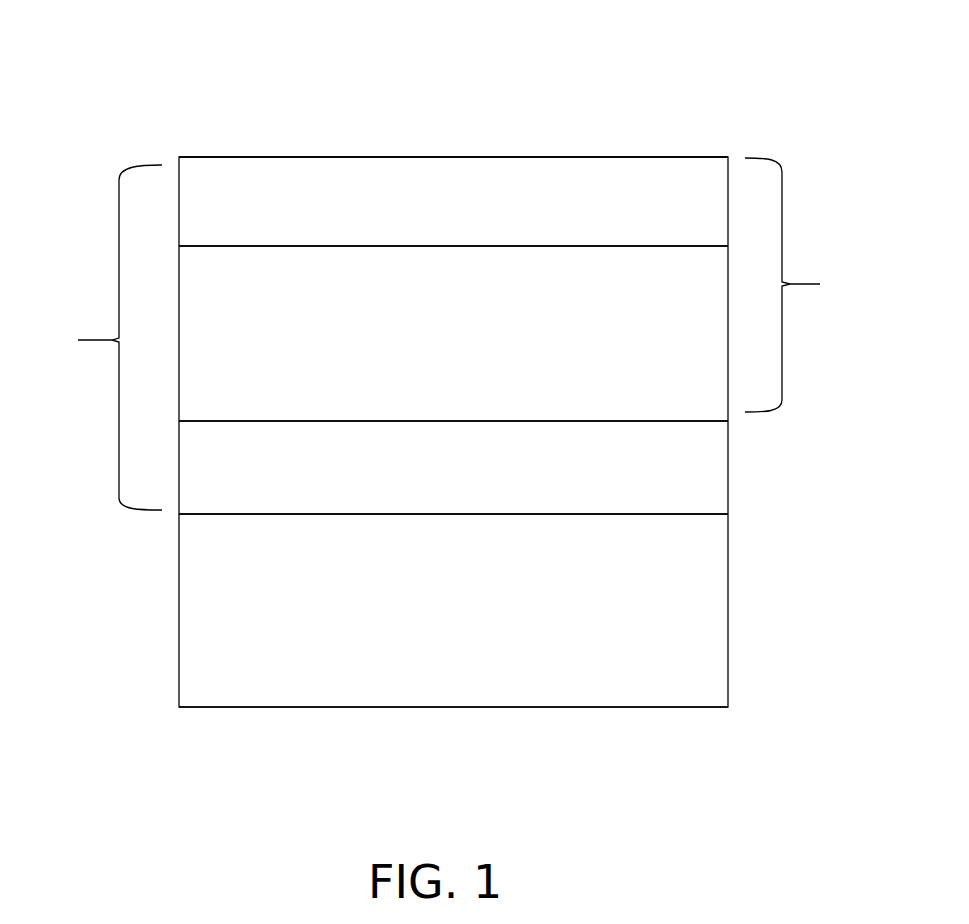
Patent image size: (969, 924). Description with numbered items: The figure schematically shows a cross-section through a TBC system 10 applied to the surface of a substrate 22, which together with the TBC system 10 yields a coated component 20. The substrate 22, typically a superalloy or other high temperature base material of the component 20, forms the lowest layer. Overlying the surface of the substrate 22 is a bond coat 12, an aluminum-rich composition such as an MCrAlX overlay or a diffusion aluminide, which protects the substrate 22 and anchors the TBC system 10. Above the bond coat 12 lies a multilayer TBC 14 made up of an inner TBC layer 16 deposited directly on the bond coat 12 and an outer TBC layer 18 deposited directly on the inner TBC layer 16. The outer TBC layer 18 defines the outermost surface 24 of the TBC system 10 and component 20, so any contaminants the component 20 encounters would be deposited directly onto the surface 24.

The TBC system 10 is at (94, 337).
The bond coat 12 is at (476, 490).
The multilayer TBC 14 is at (813, 285).
The inner TBC layer 16 is at (476, 363).
The outer TBC layer 18 is at (476, 222).
The coated component 20 is at (153, 93).
The substrate 22 is at (476, 633).
The outermost surface 24 is at (578, 156).